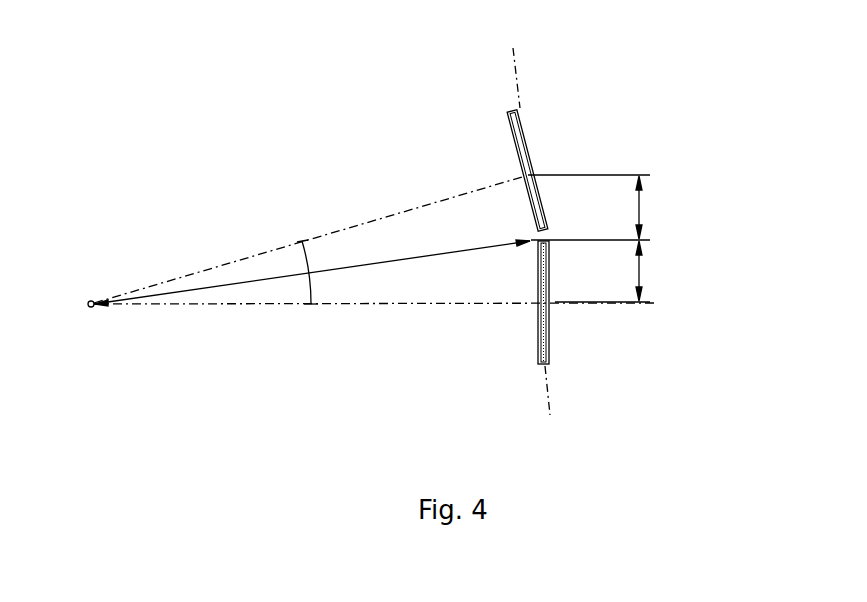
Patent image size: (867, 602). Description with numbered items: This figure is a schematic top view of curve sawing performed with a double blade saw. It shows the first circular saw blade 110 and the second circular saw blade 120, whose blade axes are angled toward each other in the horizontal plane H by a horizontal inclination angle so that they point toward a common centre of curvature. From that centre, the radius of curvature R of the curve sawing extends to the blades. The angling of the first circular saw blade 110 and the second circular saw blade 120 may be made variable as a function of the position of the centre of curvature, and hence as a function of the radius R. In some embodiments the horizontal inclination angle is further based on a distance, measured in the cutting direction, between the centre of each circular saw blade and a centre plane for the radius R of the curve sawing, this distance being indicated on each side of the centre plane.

The first circular saw blade 110 is at (518, 147).
The second circular saw blade 120 is at (538, 343).
The horizontal plane H is at (528, 218).
The radius of curvature R is at (312, 266).